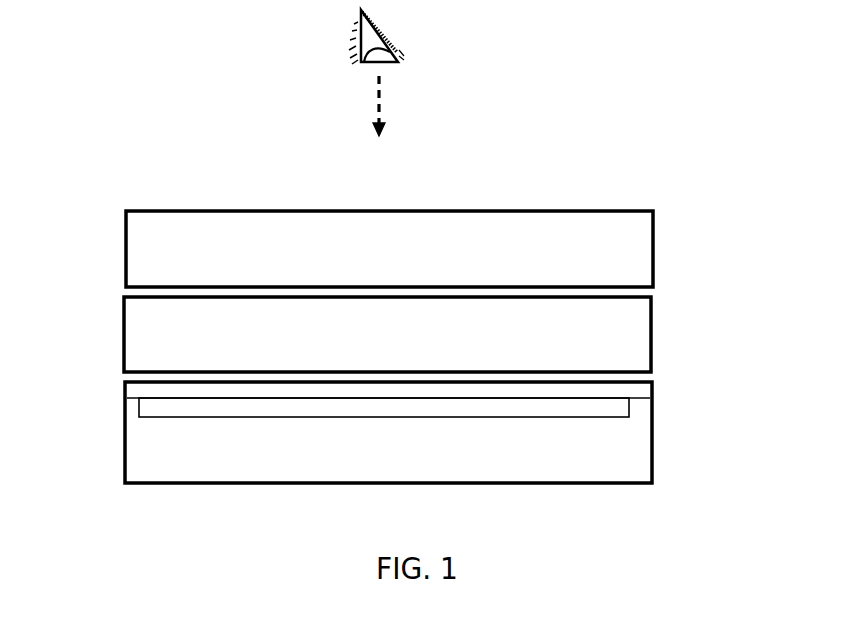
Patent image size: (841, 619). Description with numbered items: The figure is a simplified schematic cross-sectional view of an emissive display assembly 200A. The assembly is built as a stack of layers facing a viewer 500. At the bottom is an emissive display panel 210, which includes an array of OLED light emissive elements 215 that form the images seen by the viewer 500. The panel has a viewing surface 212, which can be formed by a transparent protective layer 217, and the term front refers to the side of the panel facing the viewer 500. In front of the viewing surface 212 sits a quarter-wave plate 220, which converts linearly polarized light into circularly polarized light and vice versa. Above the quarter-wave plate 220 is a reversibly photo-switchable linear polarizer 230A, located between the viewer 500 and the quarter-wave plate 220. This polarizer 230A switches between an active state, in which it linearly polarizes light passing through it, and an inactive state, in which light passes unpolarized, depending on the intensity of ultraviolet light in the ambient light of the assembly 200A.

The emissive display assembly 200A is at (159, 86).
The viewer 500 is at (405, 40).
The reversibly photo-switchable linear polarizer 230A is at (651, 236).
The quarter-wave plate 220 is at (651, 330).
The transparent protective layer 217 is at (640, 392).
The emissive display panel 210 is at (640, 440).
The OLED light emissive elements 215 is at (139, 409).
The viewing surface 212 is at (167, 383).